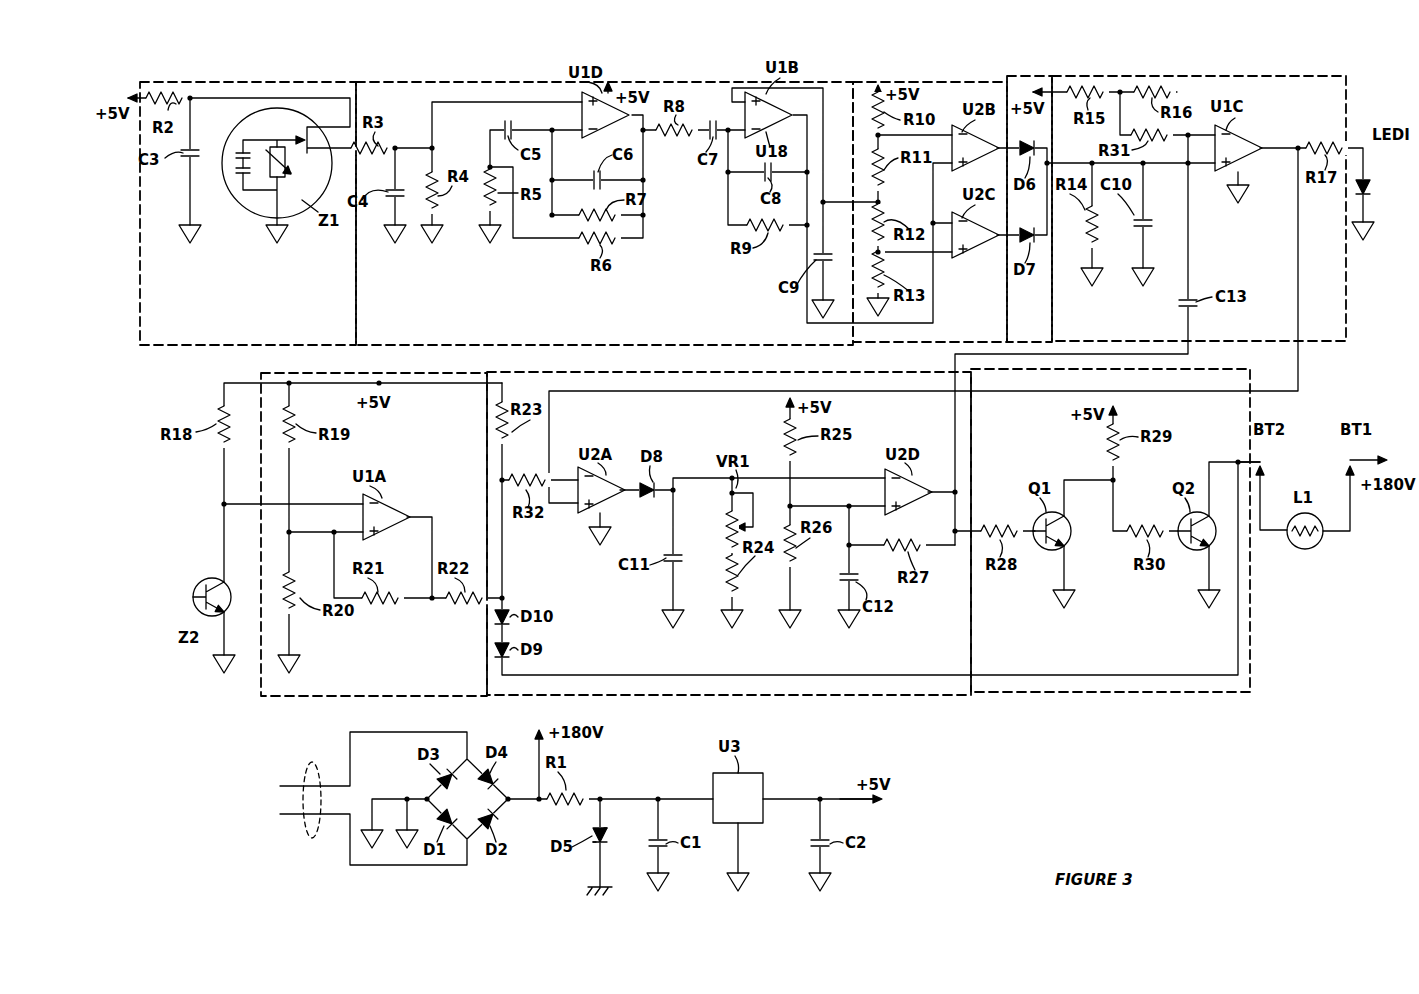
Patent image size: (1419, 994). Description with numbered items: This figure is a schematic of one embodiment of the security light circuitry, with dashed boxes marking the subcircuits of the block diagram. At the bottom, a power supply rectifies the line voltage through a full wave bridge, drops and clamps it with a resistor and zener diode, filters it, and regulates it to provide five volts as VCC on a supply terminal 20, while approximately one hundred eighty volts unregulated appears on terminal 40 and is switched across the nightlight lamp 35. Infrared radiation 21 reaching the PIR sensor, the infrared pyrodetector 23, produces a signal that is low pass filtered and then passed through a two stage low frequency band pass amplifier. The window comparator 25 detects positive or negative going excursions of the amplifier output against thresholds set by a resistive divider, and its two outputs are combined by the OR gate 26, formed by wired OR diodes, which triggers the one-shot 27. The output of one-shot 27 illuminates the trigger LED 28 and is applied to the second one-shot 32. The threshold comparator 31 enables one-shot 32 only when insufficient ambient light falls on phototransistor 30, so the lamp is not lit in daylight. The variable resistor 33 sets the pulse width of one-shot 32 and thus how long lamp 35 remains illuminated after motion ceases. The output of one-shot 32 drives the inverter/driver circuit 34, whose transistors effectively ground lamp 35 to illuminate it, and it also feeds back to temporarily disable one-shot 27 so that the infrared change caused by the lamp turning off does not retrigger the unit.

The +5V power supply output 20 is at (884, 800).
The infrared radiation 21 is at (492, 82).
The infrared pyrodetector 23 is at (240, 82).
The window comparator 25 is at (912, 82).
The OR gate 26 is at (1043, 76).
The one-shot 27 is at (1223, 76).
The trigger LED 28 is at (1370, 186).
The phototransistor 30 is at (193, 597).
The threshold comparator 31 is at (318, 373).
The one-shot 32 is at (513, 372).
The variable resistor 33 is at (724, 531).
The inverter/driver circuit 34 is at (1058, 692).
The lamp 35 is at (1300, 549).
The terminal 40 is at (539, 734).